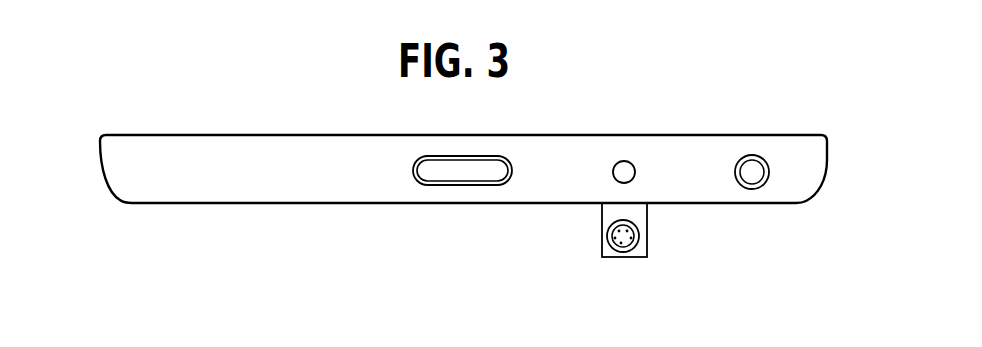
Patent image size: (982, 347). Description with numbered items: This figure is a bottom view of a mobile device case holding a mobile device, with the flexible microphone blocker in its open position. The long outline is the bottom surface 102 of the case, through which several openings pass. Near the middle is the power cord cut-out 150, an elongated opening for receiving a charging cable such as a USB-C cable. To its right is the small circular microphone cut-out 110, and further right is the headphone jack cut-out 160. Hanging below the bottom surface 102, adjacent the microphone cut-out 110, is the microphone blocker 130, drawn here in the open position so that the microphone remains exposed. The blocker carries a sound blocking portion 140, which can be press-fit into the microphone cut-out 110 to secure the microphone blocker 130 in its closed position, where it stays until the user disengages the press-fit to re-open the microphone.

The bottom surface 102 is at (139, 167).
The microphone cut-out 110 is at (627, 163).
The microphone blocker 130 is at (630, 211).
The sound blocking portion 140 is at (619, 248).
The power cord cut-out 150 is at (464, 172).
The headphone jack cut-out 160 is at (753, 158).